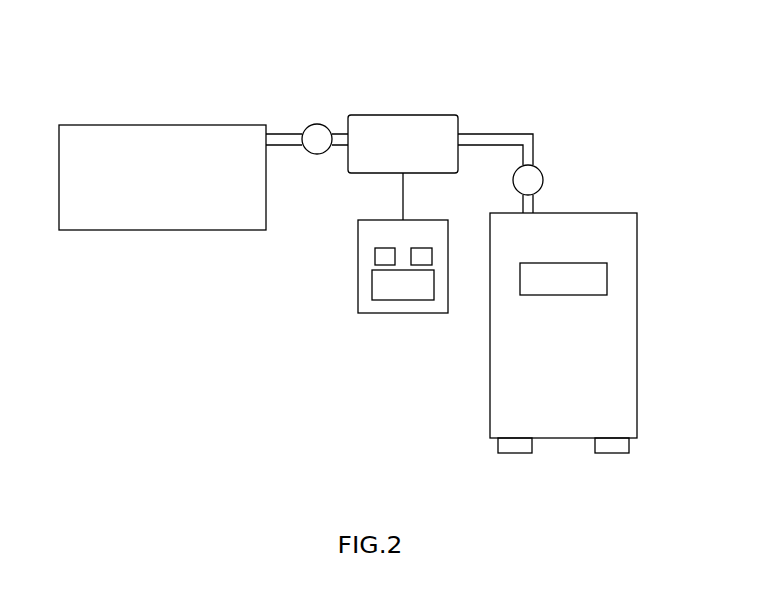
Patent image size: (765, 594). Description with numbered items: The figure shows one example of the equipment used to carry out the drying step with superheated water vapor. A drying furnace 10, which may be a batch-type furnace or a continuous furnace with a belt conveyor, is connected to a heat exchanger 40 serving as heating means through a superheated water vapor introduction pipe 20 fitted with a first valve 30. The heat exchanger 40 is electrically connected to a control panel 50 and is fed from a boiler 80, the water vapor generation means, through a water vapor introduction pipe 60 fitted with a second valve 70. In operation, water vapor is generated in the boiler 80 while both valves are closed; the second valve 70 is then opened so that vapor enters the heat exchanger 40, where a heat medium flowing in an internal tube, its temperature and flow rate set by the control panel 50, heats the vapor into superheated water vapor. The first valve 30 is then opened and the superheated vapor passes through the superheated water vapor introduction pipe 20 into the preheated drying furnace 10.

The drying furnace 10 is at (128, 125).
The superheated water vapor introduction pipe 20 is at (285, 147).
The first valve 30 is at (318, 124).
The heat exchanger 40 is at (418, 115).
The control panel 50 is at (358, 290).
The water vapor introduction pipe 60 is at (511, 133).
The second valve 70 is at (545, 180).
The boiler 80 is at (490, 408).